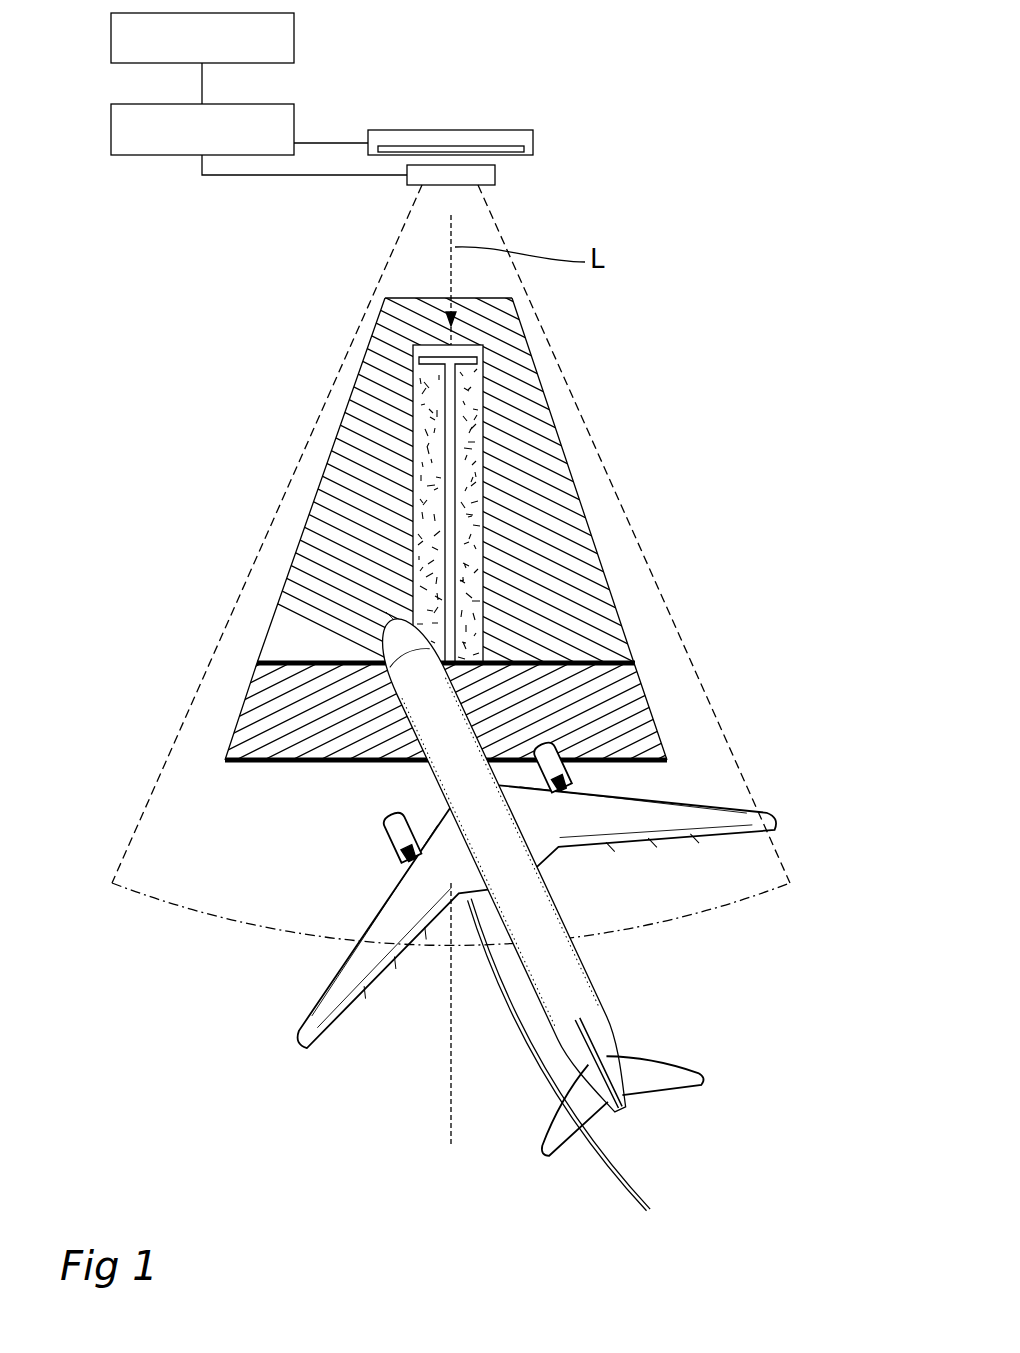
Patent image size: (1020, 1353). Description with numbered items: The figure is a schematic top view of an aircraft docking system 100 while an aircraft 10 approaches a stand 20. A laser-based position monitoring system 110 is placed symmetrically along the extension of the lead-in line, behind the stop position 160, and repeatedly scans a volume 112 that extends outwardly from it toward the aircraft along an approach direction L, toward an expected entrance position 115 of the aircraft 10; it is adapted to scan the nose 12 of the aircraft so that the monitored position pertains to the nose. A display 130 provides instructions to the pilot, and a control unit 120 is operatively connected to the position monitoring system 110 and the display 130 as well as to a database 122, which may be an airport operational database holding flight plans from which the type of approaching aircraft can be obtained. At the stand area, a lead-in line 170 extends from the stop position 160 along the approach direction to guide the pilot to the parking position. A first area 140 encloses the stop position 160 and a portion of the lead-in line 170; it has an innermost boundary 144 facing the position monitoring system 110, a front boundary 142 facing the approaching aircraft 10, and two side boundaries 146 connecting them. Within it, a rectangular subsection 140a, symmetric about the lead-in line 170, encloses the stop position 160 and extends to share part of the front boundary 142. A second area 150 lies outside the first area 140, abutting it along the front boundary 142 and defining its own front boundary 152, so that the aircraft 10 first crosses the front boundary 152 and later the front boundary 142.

The aircraft 10 is at (578, 968).
The nose 12 is at (388, 615).
The stand 20 is at (757, 270).
The aircraft docking system 100 is at (478, 62).
The position monitoring system 110 is at (468, 175).
The volume 112 is at (757, 796).
The expected entrance position 115 is at (440, 968).
The control unit 120 is at (259, 119).
The database 122 is at (202, 38).
The display 130 is at (425, 130).
The first area 140 is at (580, 568).
The subsection 140a is at (468, 448).
The front boundary 142 is at (622, 657).
The innermost boundary 144 is at (428, 300).
The side boundaries 146 is at (332, 443).
The second area 150 is at (652, 705).
The front boundary 152 is at (252, 764).
The stop position 160 is at (460, 357).
The lead-in line 170 is at (437, 505).